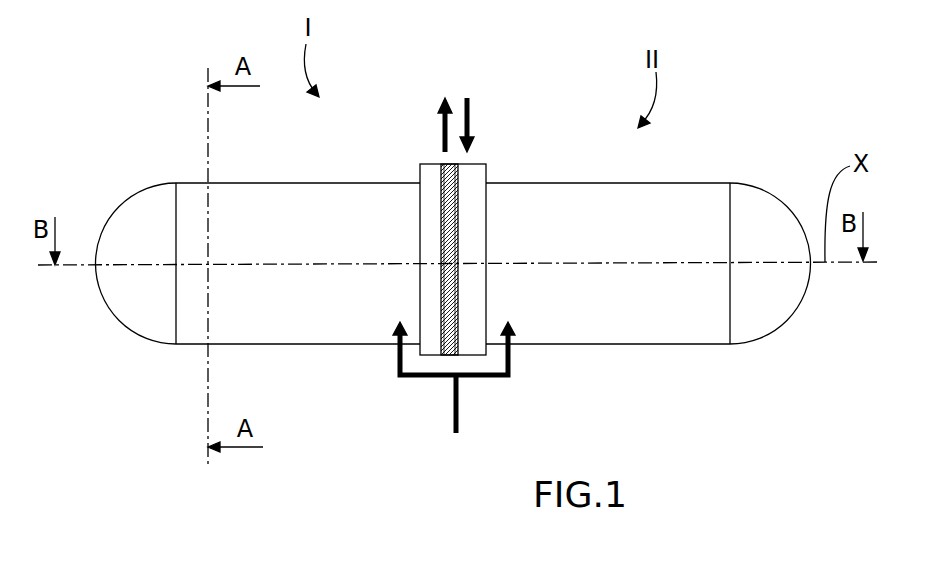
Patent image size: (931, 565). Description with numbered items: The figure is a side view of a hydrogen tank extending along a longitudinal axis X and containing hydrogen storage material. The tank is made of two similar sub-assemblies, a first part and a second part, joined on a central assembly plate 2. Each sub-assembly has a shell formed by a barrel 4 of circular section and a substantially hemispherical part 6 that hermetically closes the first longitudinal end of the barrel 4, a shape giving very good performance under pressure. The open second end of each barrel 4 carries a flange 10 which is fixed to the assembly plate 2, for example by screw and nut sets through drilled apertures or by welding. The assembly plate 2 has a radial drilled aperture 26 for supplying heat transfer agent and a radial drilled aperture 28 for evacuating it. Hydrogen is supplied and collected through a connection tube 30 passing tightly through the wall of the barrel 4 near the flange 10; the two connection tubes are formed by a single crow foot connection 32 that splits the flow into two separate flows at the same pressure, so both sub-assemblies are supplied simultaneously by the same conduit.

The assembly plate 2 is at (460, 282).
The barrel 4 is at (297, 182).
The substantially hemispherical part 6 is at (108, 222).
The flange 10 is at (419, 167).
The radial drilled aperture 26 is at (470, 113).
The radial drilled aperture 28 is at (435, 122).
The connection tube 30 is at (395, 361).
The crow foot connection 32 is at (438, 445).